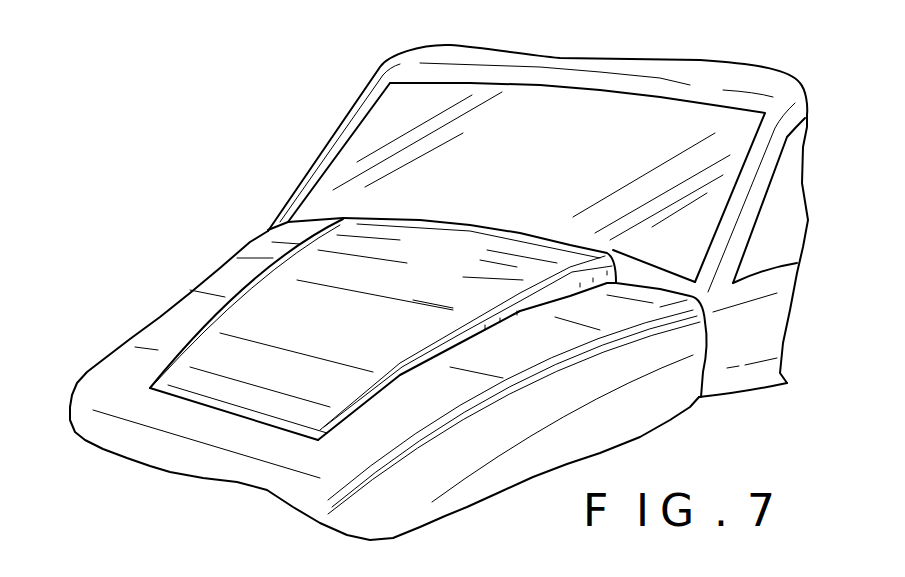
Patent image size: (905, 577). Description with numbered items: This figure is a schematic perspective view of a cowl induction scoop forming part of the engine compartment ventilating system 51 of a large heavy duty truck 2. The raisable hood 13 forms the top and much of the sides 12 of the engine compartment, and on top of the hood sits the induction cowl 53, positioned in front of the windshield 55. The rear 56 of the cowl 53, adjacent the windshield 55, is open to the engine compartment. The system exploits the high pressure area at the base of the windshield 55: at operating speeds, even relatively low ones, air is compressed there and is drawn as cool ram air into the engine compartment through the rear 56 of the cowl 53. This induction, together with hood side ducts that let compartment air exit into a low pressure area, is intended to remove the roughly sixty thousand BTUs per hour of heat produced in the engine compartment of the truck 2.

The large heavy duty truck 2 is at (358, 66).
The sides 12 is at (650, 415).
The raisable hood 13 is at (698, 343).
The engine compartment ventilating system 51 is at (249, 200).
The induction cowl 53 is at (393, 270).
The windshield 55 is at (700, 127).
The rear of the cowl 56 is at (618, 282).